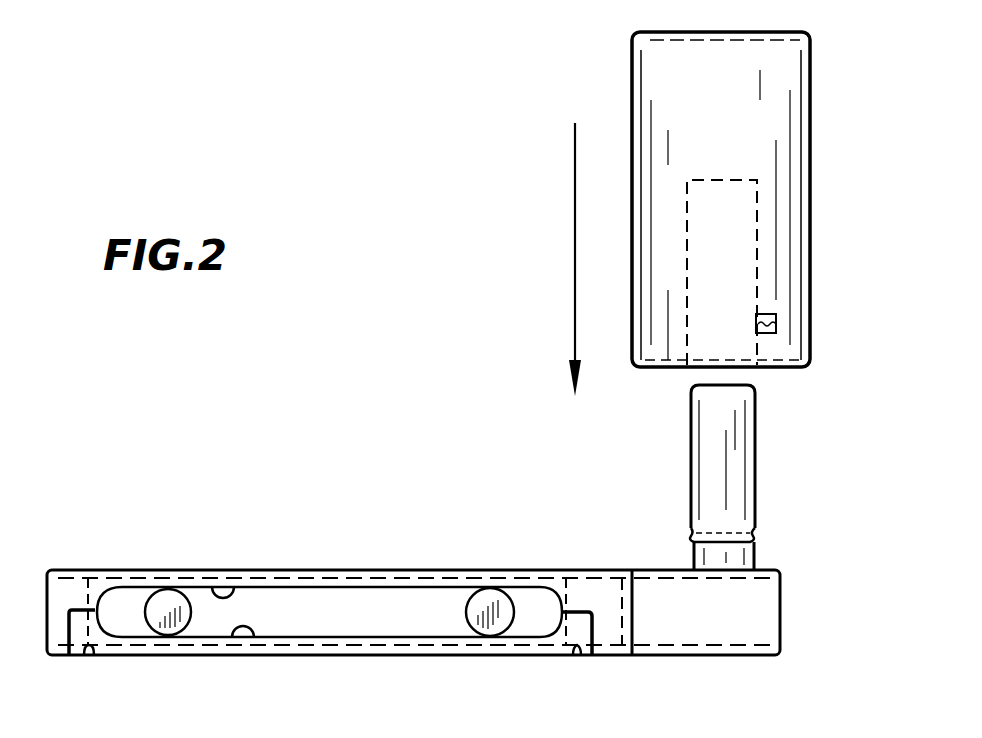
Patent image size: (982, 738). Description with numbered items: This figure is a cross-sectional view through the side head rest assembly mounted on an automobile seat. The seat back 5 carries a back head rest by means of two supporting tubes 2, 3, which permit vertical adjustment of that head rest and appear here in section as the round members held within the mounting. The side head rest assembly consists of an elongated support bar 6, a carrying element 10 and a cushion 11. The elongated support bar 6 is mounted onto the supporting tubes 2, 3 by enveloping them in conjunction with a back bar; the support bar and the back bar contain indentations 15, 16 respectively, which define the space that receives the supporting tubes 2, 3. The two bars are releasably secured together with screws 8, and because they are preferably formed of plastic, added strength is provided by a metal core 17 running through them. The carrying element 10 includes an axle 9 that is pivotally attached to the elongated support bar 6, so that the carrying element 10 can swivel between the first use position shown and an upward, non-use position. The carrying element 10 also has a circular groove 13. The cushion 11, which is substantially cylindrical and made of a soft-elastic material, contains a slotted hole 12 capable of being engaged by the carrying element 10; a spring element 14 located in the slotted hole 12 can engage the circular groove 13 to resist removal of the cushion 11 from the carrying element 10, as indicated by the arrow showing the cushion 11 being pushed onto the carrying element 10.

The supporting tube 2 is at (469, 597).
The supporting tube 3 is at (188, 595).
The seat back 5 is at (415, 674).
The elongated support bar 6 is at (367, 570).
The screws 8 is at (92, 656).
The axle 9 is at (782, 598).
The carrying element 10 is at (757, 497).
The cushion 11 is at (811, 215).
The slotted hole 12 is at (757, 260).
The circular groove 13 is at (757, 536).
The spring element 14 is at (776, 326).
The indentation 15 is at (243, 638).
The indentation 16 is at (216, 588).
The metal core 17 is at (303, 570).